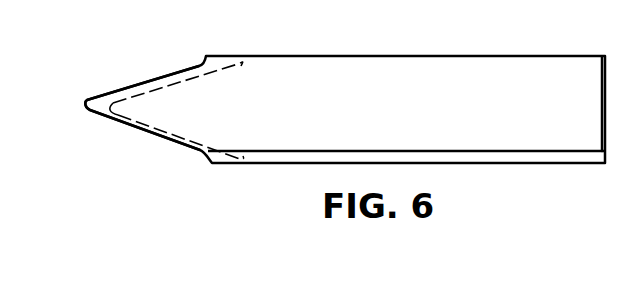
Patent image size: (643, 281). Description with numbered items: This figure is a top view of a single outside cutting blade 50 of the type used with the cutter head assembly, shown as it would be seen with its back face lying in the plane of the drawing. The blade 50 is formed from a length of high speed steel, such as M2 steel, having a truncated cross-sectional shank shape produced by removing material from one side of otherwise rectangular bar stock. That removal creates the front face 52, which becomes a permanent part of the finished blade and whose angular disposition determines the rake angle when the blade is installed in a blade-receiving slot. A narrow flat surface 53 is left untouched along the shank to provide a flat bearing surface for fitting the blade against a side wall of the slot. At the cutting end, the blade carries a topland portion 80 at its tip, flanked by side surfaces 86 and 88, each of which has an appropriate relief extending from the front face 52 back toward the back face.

The cutting blade 50 is at (487, 50).
The front face 52 is at (409, 109).
The narrow flat surface 53 is at (502, 158).
The topland portion 80 is at (86, 103).
The side surface 86 is at (147, 136).
The side surface 88 is at (148, 80).